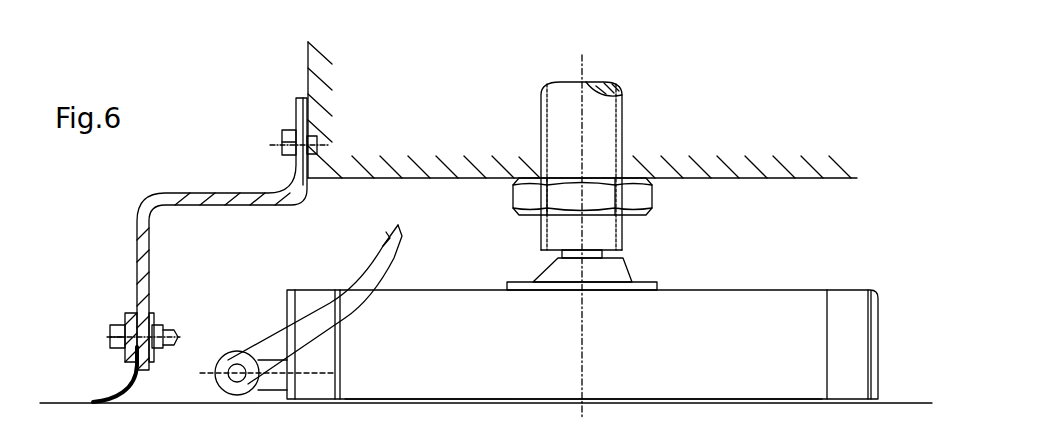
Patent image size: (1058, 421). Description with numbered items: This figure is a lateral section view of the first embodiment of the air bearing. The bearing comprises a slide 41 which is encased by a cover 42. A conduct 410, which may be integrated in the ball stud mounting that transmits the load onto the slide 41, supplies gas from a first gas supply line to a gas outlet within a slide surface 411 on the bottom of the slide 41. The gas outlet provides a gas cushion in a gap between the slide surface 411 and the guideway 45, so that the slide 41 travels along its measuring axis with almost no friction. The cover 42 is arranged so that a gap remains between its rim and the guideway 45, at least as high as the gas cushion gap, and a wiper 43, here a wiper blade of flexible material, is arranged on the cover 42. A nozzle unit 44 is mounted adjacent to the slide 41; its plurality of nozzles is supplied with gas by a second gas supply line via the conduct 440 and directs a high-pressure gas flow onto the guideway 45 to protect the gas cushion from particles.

The slide 41 is at (487, 348).
The conduct 410 is at (568, 266).
The slide surface 411 is at (641, 396).
The cover 42 is at (773, 243).
The wiper 43 is at (125, 387).
The nozzle unit 44 is at (851, 305).
The conduct 440 is at (281, 345).
The guideway 45 is at (897, 400).